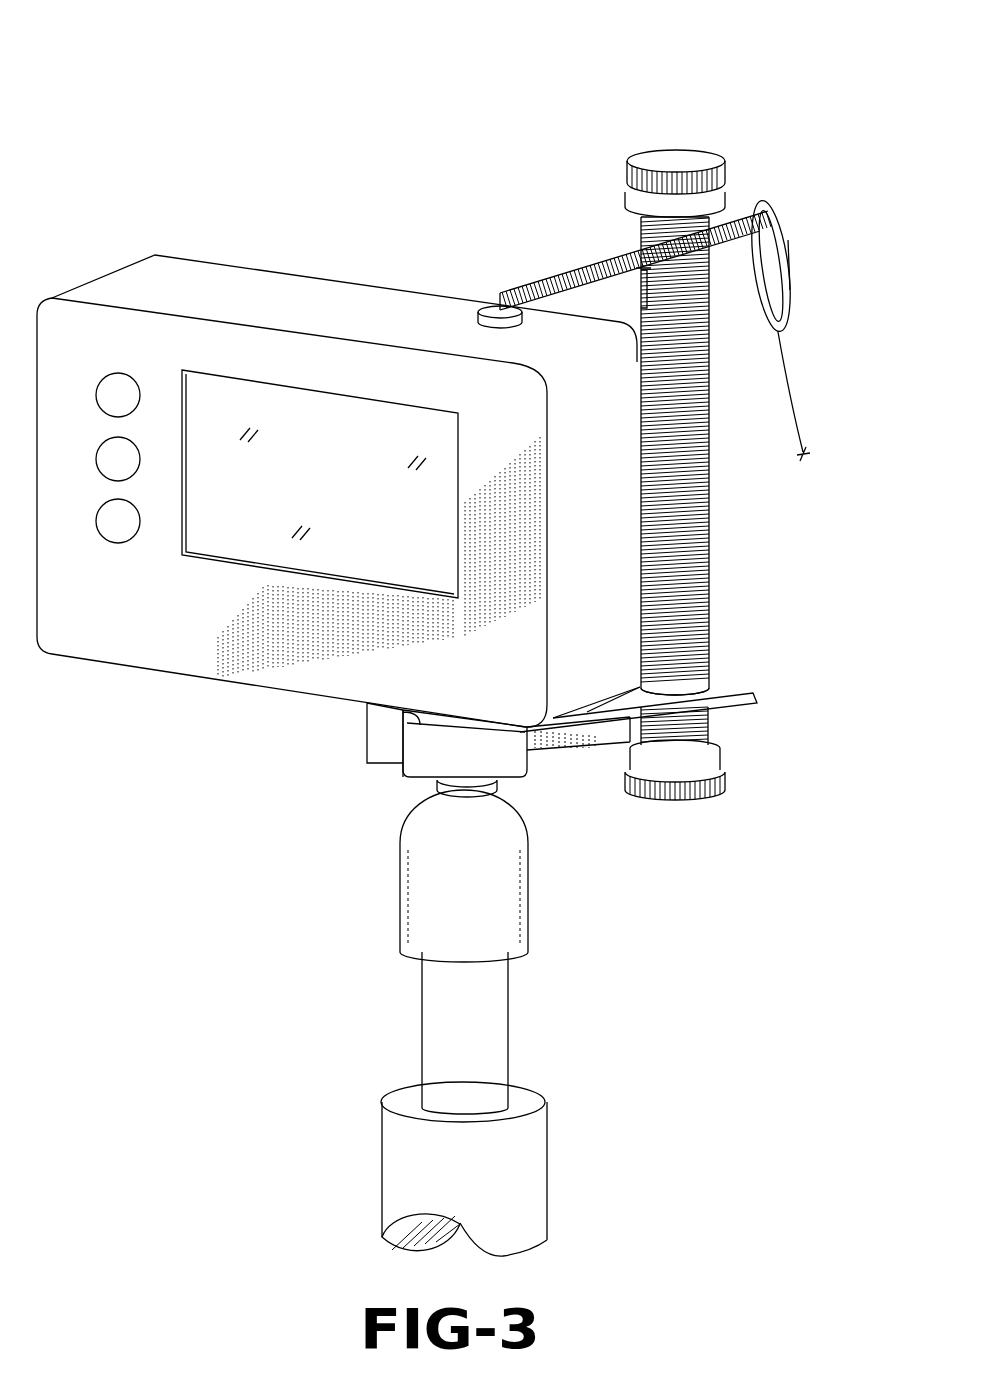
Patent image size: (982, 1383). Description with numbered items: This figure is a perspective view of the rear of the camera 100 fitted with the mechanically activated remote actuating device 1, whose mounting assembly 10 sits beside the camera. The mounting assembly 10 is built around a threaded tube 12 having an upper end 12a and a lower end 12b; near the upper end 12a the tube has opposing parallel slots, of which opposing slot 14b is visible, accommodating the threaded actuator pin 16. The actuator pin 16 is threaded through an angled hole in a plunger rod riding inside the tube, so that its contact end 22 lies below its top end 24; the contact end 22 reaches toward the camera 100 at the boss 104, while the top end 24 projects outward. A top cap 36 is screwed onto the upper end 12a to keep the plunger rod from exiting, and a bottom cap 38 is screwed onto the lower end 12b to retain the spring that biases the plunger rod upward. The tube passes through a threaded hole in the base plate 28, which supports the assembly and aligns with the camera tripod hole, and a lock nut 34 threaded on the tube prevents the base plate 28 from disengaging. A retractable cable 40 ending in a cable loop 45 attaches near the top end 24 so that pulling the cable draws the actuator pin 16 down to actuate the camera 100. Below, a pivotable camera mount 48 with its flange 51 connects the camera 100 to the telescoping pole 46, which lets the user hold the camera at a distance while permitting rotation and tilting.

The mechanically activated remote actuating device 1 is at (163, 143).
The mounting assembly 10 is at (727, 132).
The threaded tube 12 is at (710, 498).
The upper end 12a is at (638, 236).
The lower end 12b is at (712, 682).
The opposing slot 14b is at (641, 303).
The threaded actuator pin 16 is at (590, 263).
The contact end 22 is at (497, 298).
The top end 24 is at (787, 216).
The base plate 28 is at (562, 757).
The lock nut 34 is at (757, 705).
The top cap 36 is at (670, 160).
The bottom cap 38 is at (722, 765).
The retractable cable 40 is at (793, 400).
The cable loop 45 is at (792, 291).
The telescoping pole 46 is at (382, 1160).
The pivotable camera mount 48 is at (400, 862).
The flange 51 is at (367, 752).
The camera 100 is at (92, 287).
The mounting boss 104 is at (483, 315).